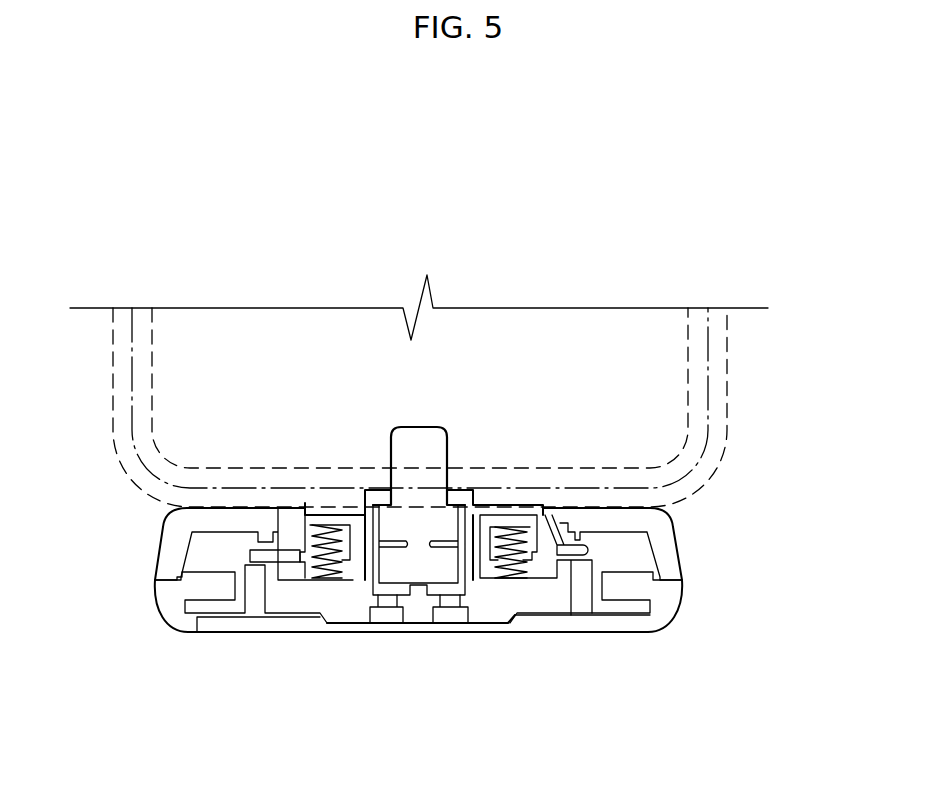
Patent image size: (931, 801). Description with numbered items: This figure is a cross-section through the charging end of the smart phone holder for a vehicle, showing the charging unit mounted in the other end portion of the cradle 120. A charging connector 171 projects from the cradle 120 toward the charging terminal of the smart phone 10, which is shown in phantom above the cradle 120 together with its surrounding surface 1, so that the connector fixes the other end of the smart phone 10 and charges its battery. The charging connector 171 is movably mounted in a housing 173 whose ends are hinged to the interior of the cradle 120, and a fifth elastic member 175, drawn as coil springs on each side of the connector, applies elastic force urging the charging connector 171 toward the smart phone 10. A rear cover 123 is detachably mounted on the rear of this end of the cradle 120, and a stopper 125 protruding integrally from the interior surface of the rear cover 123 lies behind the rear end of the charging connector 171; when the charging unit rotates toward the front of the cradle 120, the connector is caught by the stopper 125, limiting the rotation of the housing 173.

The appliance (refrigerator) door/wall 1 is at (726, 360).
The smart phone 10 is at (562, 347).
The cradle 120 is at (638, 588).
The rear cover 123 is at (555, 625).
The stopper 125 is at (372, 613).
The charging connector 171 is at (437, 450).
The housing 173 is at (578, 555).
The fifth elastic member 175 is at (507, 580).